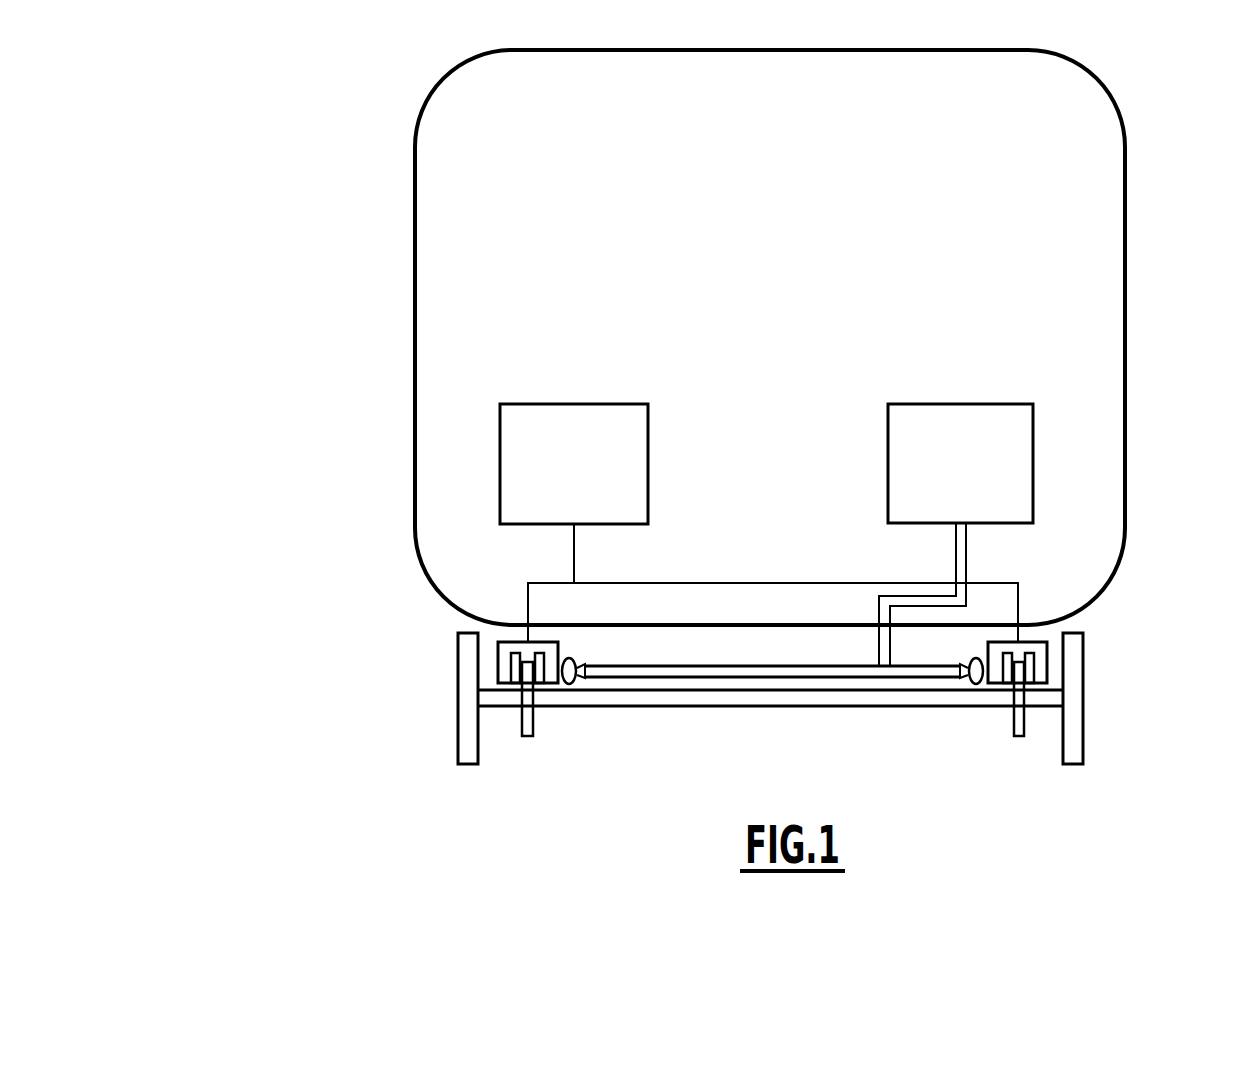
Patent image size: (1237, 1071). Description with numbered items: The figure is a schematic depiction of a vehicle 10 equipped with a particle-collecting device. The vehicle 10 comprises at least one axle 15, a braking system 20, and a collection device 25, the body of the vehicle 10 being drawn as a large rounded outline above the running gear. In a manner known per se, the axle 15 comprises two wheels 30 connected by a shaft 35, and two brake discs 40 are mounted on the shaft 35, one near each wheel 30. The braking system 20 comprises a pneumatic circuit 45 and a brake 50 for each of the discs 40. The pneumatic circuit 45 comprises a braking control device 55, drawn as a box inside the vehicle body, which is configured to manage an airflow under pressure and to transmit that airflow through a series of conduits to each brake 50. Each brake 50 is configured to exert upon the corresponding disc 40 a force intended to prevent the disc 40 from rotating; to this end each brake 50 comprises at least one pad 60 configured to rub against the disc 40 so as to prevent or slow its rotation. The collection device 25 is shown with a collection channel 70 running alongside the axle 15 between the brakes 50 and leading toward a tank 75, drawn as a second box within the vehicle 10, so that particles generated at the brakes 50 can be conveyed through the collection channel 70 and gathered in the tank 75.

The vehicle 10 is at (372, 151).
The axle 15 is at (1180, 779).
The braking system 20 is at (285, 440).
The collection device 25 is at (1070, 513).
The wheel 30 is at (1073, 735).
The shaft 35 is at (945, 698).
The disc 40 is at (1021, 737).
The pneumatic circuit 45 is at (543, 583).
The brake 50 is at (498, 663).
The braking control device 55 is at (517, 430).
The pad 60 is at (1030, 667).
The collection channel 70 is at (575, 685).
The tank 75 is at (992, 420).